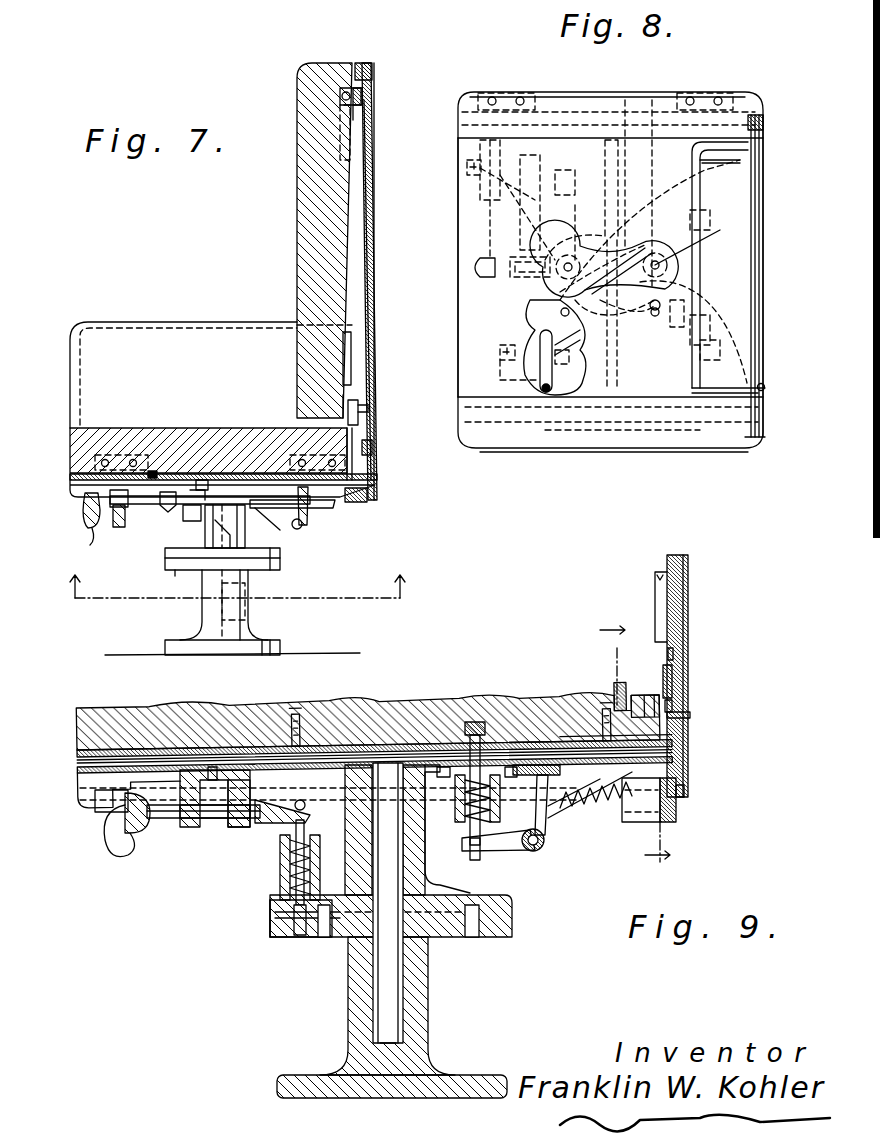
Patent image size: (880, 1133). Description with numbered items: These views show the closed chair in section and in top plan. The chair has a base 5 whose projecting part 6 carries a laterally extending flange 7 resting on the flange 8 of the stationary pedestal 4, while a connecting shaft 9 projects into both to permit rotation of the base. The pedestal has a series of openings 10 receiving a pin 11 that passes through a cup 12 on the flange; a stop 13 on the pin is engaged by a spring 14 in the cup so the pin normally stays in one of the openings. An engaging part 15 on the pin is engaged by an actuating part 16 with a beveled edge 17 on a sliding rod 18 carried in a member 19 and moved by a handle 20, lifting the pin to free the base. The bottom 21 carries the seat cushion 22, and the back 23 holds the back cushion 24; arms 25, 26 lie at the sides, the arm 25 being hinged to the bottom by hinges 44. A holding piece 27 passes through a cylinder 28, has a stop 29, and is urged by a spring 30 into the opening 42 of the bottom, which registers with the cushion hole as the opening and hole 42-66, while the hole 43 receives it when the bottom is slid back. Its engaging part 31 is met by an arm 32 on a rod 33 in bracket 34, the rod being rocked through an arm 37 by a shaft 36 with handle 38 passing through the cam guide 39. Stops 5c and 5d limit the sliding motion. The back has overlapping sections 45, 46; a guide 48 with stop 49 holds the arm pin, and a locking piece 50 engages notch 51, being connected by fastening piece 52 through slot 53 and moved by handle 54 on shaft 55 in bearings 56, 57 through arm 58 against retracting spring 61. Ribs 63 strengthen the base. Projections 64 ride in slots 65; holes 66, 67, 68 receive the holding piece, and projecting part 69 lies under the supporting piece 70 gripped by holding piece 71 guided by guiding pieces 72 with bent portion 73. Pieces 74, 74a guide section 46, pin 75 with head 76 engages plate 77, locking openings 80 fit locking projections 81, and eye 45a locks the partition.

In FIG. 7, the pedestal 4 is at (245, 607).
In FIG. 9, the pedestal 4 is at (428, 1015).
In FIG. 7, the base 5 is at (75, 490).
In FIG. 9, the base 5 is at (80, 772).
In FIG. 8, the stop 5c is at (625, 100).
In FIG. 8, the stop 5d is at (758, 112).
In FIG. 7, the projecting part 6 is at (210, 543).
In FIG. 9, the projecting part 6 is at (360, 915).
In FIG. 7, the flange 7 is at (175, 555).
In FIG. 9, the flange 7 is at (500, 903).
In FIG. 7, the flange 8 is at (180, 578).
In FIG. 9, the flange 8 is at (498, 930).
In FIG. 7, the connecting piece or shaft 9 is at (245, 618).
In FIG. 8, the connecting piece or shaft 9 is at (612, 282).
In FIG. 9, the connecting piece or shaft 9 is at (382, 995).
In FIG. 7, the openings 10 is at (180, 574).
In FIG. 9, the openings 10 is at (322, 932).
In FIG. 9, the pin 11 is at (300, 935).
In FIG. 7, the cup 12 is at (190, 525).
In FIG. 8, the cup 12 is at (548, 260).
In FIG. 9, the cup 12 is at (282, 880).
In FIG. 7, the stop 13 is at (233, 593).
In FIG. 9, the stop 13 is at (272, 925).
In FIG. 9, the spring 14 is at (275, 912).
In FIG. 9, the engaging part 15 is at (302, 800).
In FIG. 9, the actuating part 16 is at (247, 826).
In FIG. 9, the beveled edge 17 is at (285, 740).
In FIG. 7, the sliding rod 18 is at (210, 500).
In FIG. 9, the sliding rod 18 is at (172, 818).
In FIG. 7, the member 19 is at (148, 510).
In FIG. 9, the member 19 is at (210, 820).
In FIG. 7, the handle 20 is at (95, 510).
In FIG. 8, the handle 20 is at (478, 265).
In FIG. 9, the handle 20 is at (133, 832).
In FIG. 7, the bottom 21 is at (75, 477).
In FIG. 8, the bottom 21 is at (532, 368).
In FIG. 9, the bottom 21 is at (77, 755).
In FIG. 7, the seat cushion 22 is at (95, 440).
In FIG. 8, the seat cushion 22 is at (465, 300).
In FIG. 9, the seat cushion 22 is at (110, 728).
In FIG. 7, the back 23 is at (376, 276).
In FIG. 8, the back 23 is at (765, 270).
In FIG. 7, the back cushion 24 is at (297, 187).
In FIG. 8, the back cushion 24 is at (740, 232).
In FIG. 7, the arm 25 is at (140, 322).
In FIG. 8, the arm 25 is at (575, 92).
In FIG. 8, the arm 26 is at (556, 452).
In FIG. 7, the holding piece 27 is at (255, 520).
In FIG. 8, the holding piece 27 is at (710, 236).
In FIG. 9, the holding piece 27 is at (478, 735).
In FIG. 9, the cylinder 28 is at (462, 818).
In FIG. 9, the stop 29 is at (450, 767).
In FIG. 9, the spring 30 is at (425, 780).
In FIG. 9, the engaging part 31 is at (476, 862).
In FIG. 7, the arm 32 is at (272, 527).
In FIG. 9, the arm 32 is at (510, 850).
In FIG. 7, the rod 33 is at (303, 525).
In FIG. 8, the rod 33 is at (690, 290).
In FIG. 9, the rod 33 is at (540, 850).
In FIG. 9, the bracket 34 is at (542, 778).
In FIG. 7, the shaft 36 is at (196, 500).
In FIG. 8, the shaft 36 is at (640, 355).
In FIG. 7, the arm 37 is at (309, 515).
In FIG. 7, the handle 38 is at (118, 527).
In FIG. 8, the handle 38 is at (500, 352).
In FIG. 7, the cam guide 39 is at (165, 508).
In FIG. 8, the cam guide 39 is at (570, 360).
In FIG. 9, the opening 42 is at (470, 775).
In FIG. 8, the opening and hole 42-66 is at (650, 255).
In FIG. 8, the hole 43 is at (584, 250).
In FIG. 9, the hole 43 is at (298, 740).
In FIG. 7, the hinges 44 is at (112, 455).
In FIG. 8, the hinges 44 is at (488, 93).
In FIG. 7, the back section 45 is at (378, 222).
In FIG. 8, the back section 45 is at (766, 298).
In FIG. 9, the back section 45 is at (688, 572).
In FIG. 8, the eye 45a is at (765, 386).
In FIG. 7, the back section 46 is at (372, 192).
In FIG. 8, the back section 46 is at (768, 328).
In FIG. 9, the back section 46 is at (683, 600).
In FIG. 9, the guide 48 is at (658, 585).
In FIG. 9, the stop 49 is at (660, 640).
In FIG. 9, the locking piece 50 is at (674, 672).
In FIG. 9, the notch 51 is at (673, 655).
In FIG. 9, the fastening piece 52 is at (690, 716).
In FIG. 9, the slot 53 is at (673, 704).
In FIG. 7, the handle 54 is at (90, 530).
In FIG. 8, the handle 54 is at (467, 165).
In FIG. 9, the handle 54 is at (110, 852).
In FIG. 8, the shaft 55 is at (652, 100).
In FIG. 9, the shaft 55 is at (160, 796).
In FIG. 9, the bearing 56 is at (92, 806).
In FIG. 9, the bearing 57 is at (645, 822).
In FIG. 9, the arm 58 is at (672, 822).
In FIG. 9, the retracting spring 61 is at (602, 802).
In FIG. 7, the strengthening ribs 63 is at (225, 530).
In FIG. 9, the strengthening ribs 63 is at (275, 828).
In FIG. 7, the projections 64 is at (152, 470).
In FIG. 8, the projections 64 is at (545, 205).
In FIG. 7, the slots 65 is at (200, 482).
In FIG. 8, the slots 65 is at (520, 192).
In FIG. 9, the hole 66 is at (610, 740).
In FIG. 8, the hole 67 is at (690, 324).
In FIG. 8, the hole 68 is at (560, 305).
In FIG. 7, the projecting part 69 is at (357, 502).
In FIG. 9, the projecting part 69 is at (678, 744).
In FIG. 7, the supporting piece 70 is at (355, 460).
In FIG. 7, the holding piece 71 is at (343, 398).
In FIG. 7, the guiding pieces 72 is at (365, 400).
In FIG. 7, the bent portion 73 is at (370, 412).
In FIG. 7, the piece 74 is at (372, 70).
In FIG. 7, the piece 74a is at (374, 452).
In FIG. 9, the piece 74a is at (665, 690).
In FIG. 7, the pin 75 is at (350, 103).
In FIG. 7, the head 76 is at (343, 96).
In FIG. 7, the plate 77 is at (370, 114).
In FIG. 7, the locking openings 80 is at (352, 348).
In FIG. 9, the locking projections 81 is at (77, 762).